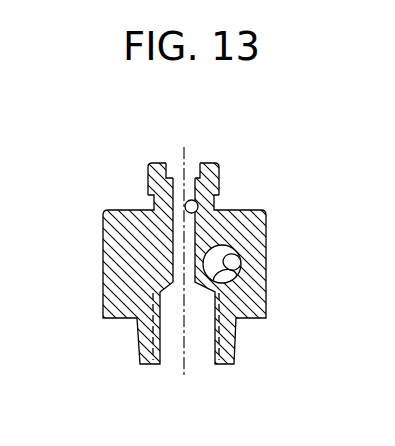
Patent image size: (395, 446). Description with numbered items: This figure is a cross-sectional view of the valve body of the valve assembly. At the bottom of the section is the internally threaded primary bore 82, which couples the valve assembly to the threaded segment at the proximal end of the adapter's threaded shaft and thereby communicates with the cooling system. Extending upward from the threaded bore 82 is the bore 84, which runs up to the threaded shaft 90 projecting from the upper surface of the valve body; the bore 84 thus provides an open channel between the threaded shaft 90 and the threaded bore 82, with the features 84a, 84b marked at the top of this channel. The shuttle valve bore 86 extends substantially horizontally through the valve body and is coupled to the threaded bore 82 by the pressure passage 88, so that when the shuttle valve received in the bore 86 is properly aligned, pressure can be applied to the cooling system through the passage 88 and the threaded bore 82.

The primary bore 82 is at (213, 350).
The bore 84 is at (200, 201).
The counterbore edge 84a is at (176, 163).
The counterbore edge 84b is at (198, 163).
The shuttle valve bore 86 is at (230, 280).
The pressure passage 88 is at (235, 267).
The threaded shaft 90 is at (222, 178).